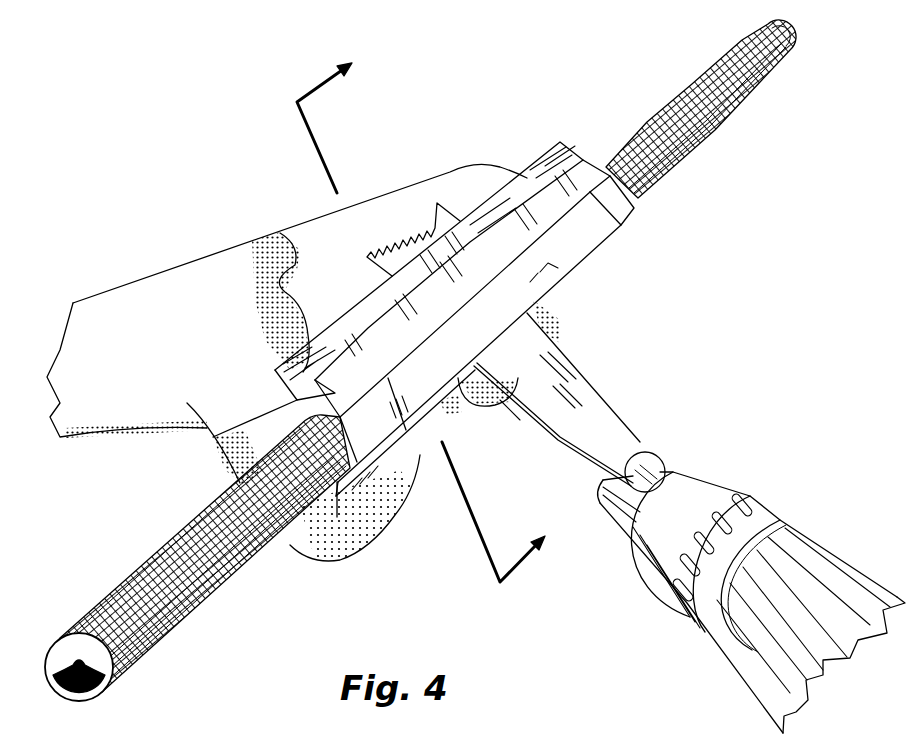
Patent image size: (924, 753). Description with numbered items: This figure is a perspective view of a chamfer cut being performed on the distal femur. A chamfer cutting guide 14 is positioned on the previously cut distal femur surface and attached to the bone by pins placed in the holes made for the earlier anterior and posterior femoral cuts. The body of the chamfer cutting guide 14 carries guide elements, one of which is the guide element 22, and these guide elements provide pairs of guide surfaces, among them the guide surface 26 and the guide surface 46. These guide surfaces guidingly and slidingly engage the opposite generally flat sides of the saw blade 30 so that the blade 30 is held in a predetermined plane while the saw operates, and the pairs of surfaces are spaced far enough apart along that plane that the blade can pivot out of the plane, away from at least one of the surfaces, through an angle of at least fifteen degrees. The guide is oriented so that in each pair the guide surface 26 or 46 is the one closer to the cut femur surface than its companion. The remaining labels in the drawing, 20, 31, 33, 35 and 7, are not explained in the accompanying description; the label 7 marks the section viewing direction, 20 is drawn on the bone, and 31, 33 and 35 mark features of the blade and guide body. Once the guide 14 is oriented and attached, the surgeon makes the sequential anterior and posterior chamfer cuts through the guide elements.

The chamfer cutting guide 14 is at (430, 401).
The femur (bone) 20 is at (210, 433).
The guide element 22 is at (609, 212).
The guide surface 26 is at (417, 462).
The saw blade 30 is at (567, 363).
The saw blade cutting surface 31 is at (563, 387).
The serrated anterior flange 33 is at (427, 220).
The top surface of block 35 is at (557, 158).
The guide surface 46 is at (323, 343).
The section line for FIG. 7 is at (423, 329).